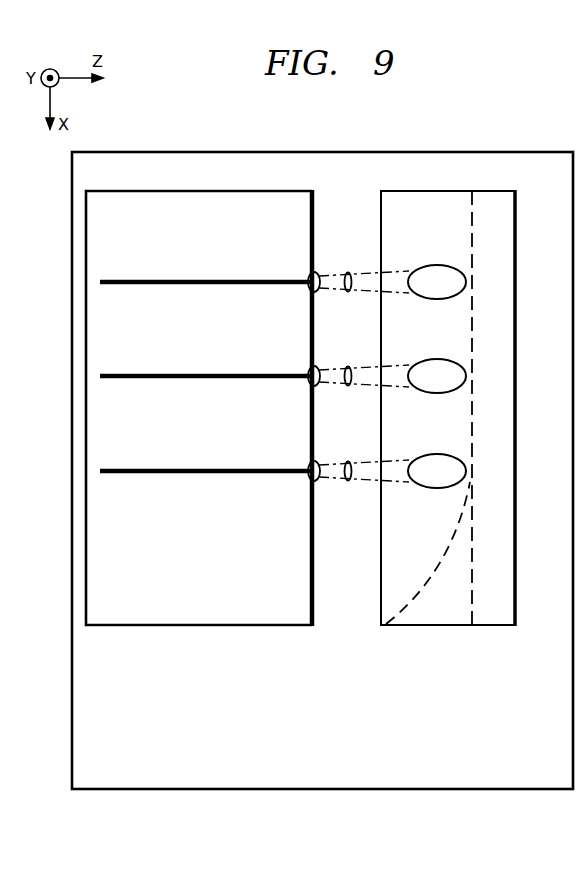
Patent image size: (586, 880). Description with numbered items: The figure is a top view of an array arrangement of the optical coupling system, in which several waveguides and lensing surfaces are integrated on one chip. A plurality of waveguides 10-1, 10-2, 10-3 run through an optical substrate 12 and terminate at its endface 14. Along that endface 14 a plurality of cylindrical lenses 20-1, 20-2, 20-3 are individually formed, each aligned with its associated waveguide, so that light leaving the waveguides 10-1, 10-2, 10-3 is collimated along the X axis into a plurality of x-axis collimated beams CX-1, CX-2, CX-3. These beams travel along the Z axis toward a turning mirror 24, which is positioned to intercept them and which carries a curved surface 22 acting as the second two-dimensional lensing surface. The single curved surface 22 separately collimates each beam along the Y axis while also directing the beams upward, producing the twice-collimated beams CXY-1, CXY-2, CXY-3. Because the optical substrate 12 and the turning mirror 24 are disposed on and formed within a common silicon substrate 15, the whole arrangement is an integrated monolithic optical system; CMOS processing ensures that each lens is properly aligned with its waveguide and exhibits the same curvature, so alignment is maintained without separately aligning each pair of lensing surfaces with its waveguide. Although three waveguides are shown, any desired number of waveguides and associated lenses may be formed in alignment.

The waveguide 10-1 is at (121, 469).
The waveguide 10-2 is at (121, 374).
The waveguide 10-3 is at (121, 280).
The optical substrate 12 is at (180, 615).
The endface 14 is at (314, 206).
The common silicon substrate 15 is at (305, 778).
The cylindrical lens 20-1 is at (311, 479).
The cylindrical lens 20-2 is at (311, 384).
The cylindrical lens 20-3 is at (311, 290).
The curved surface 22 is at (384, 201).
The turning mirror 24 is at (503, 218).
The x-axis collimated beam CX-1 is at (348, 481).
The x-axis collimated beam CX-2 is at (348, 386).
The x-axis collimated beam CX-3 is at (348, 292).
The twice-collimated beam CXY-1 is at (440, 453).
The twice-collimated beam CXY-2 is at (440, 358).
The twice-collimated beam CXY-3 is at (440, 264).